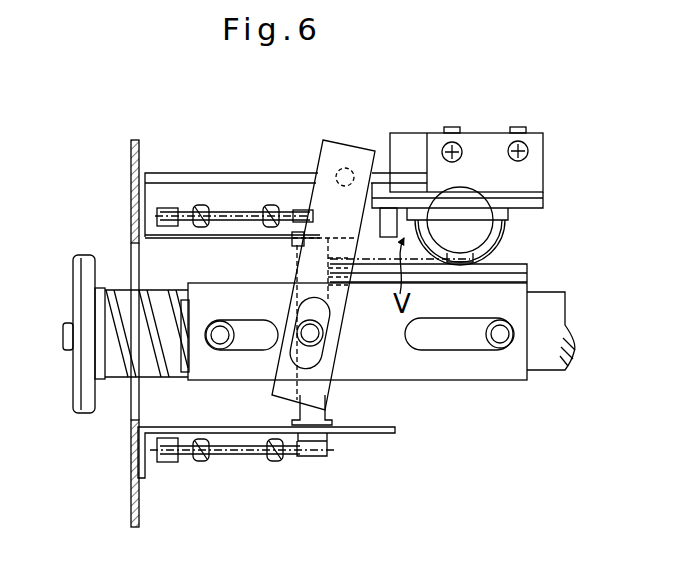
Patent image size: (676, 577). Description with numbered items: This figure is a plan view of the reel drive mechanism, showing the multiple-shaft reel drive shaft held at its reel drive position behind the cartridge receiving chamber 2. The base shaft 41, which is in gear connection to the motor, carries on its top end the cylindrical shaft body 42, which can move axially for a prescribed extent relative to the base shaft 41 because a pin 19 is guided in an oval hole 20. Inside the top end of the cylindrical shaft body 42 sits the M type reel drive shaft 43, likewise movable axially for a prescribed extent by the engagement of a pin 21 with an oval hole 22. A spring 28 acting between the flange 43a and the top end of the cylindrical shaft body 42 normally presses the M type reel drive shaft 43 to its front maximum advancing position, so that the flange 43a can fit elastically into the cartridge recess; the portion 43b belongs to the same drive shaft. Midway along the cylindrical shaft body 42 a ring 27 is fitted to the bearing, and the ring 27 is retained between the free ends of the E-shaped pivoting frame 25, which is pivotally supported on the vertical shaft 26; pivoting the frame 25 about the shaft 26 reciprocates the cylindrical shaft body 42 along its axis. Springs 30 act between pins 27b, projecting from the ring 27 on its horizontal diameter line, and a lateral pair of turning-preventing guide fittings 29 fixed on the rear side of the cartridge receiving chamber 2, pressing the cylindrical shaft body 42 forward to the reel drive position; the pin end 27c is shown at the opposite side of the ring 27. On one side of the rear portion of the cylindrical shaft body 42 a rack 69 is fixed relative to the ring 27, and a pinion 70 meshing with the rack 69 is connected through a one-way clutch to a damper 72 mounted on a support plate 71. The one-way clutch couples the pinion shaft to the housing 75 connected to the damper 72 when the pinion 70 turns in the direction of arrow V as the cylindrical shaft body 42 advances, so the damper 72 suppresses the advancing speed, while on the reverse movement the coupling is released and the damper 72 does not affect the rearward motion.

The cartridge receiving chamber 2 is at (112, 170).
The pin 19 is at (508, 348).
The oval hole 20 is at (473, 340).
The pin 21 is at (223, 343).
The oval hole 22 is at (258, 348).
The pivoting frame 25 is at (343, 141).
The vertical shaft 26 is at (348, 168).
The ring 27 is at (322, 410).
The pins 27b is at (313, 460).
The pin end 27c is at (530, 273).
The spring 28 is at (127, 366).
The turning-preventing guide fittings 29 is at (218, 238).
The springs 30 is at (242, 212).
The base shaft 41 is at (557, 368).
The cylindrical shaft body 42 is at (416, 371).
The M type reel drive shaft 43 is at (110, 309).
The flange 43a is at (78, 410).
The knob 43b is at (71, 350).
The rack 69 is at (527, 262).
The pinion 70 is at (508, 257).
The support plate 71 is at (302, 172).
The damper 72 is at (480, 225).
The housing 75 is at (507, 247).